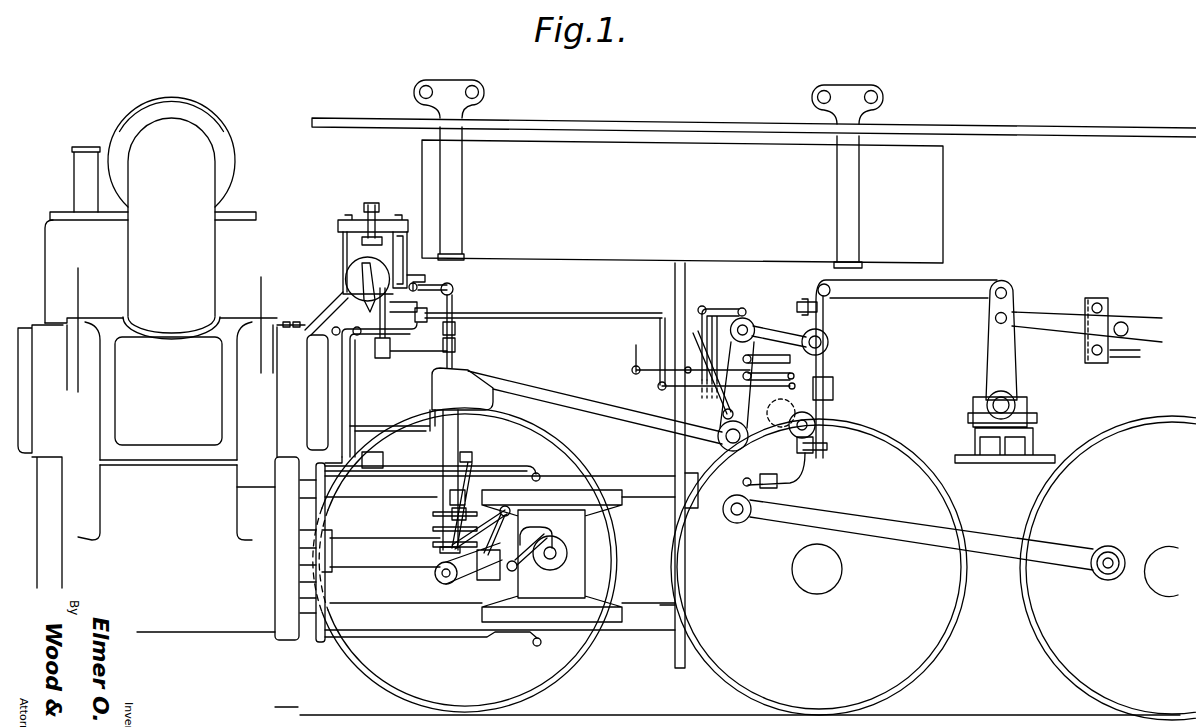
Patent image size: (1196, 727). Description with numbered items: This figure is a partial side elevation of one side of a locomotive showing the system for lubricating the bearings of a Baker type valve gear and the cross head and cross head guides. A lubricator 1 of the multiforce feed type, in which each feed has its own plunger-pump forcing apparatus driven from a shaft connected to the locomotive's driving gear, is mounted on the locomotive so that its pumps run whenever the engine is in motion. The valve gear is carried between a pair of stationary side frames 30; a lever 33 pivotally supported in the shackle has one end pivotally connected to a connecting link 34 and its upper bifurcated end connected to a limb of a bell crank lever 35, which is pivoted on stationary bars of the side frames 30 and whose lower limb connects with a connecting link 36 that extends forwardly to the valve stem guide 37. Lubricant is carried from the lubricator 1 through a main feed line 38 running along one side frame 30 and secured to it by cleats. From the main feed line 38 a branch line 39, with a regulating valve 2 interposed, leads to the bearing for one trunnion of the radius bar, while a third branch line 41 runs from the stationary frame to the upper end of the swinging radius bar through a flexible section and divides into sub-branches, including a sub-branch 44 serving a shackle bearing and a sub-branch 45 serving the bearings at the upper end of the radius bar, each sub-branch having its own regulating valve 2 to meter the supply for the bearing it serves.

The lubricator 1 is at (342, 223).
The regulating valve 2 is at (813, 452).
The stationary side frames 30 is at (727, 340).
The lever 33 is at (783, 441).
The connecting link 34 is at (887, 527).
The bell crank lever 35 is at (755, 332).
The connecting link 36 is at (570, 397).
The valve stem guide 37 is at (476, 385).
The main feed line 38 is at (655, 380).
The branch line 39 is at (798, 355).
The third branch line 41 is at (768, 370).
The sub-branch 44 is at (811, 316).
The sub-branch 45 is at (828, 296).